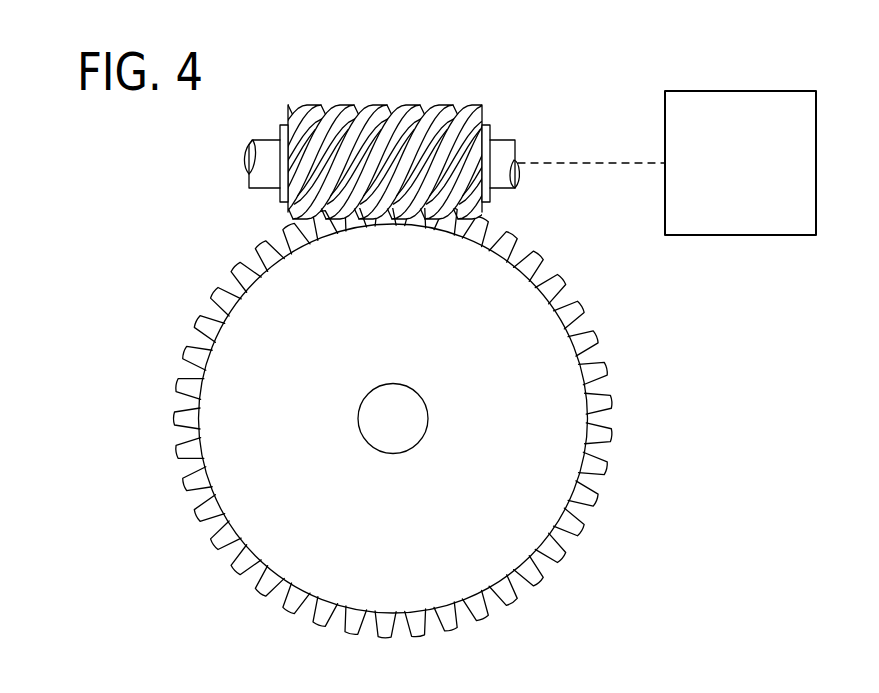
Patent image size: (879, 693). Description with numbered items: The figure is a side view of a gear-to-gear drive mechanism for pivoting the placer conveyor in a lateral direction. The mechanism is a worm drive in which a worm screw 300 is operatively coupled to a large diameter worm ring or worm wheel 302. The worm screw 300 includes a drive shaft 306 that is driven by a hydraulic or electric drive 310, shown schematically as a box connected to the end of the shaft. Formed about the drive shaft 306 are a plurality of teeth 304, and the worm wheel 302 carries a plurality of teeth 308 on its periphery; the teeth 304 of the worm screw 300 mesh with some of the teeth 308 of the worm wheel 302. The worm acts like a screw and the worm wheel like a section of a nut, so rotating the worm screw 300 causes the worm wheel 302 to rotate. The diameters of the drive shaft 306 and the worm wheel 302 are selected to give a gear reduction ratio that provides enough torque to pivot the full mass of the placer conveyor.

The worm screw 300 is at (442, 336).
The worm wheel 302 is at (442, 418).
The teeth 304 is at (325, 106).
The drive shaft 306 is at (247, 178).
The teeth 308 is at (203, 510).
The hydraulic or electric drive 310 is at (762, 171).